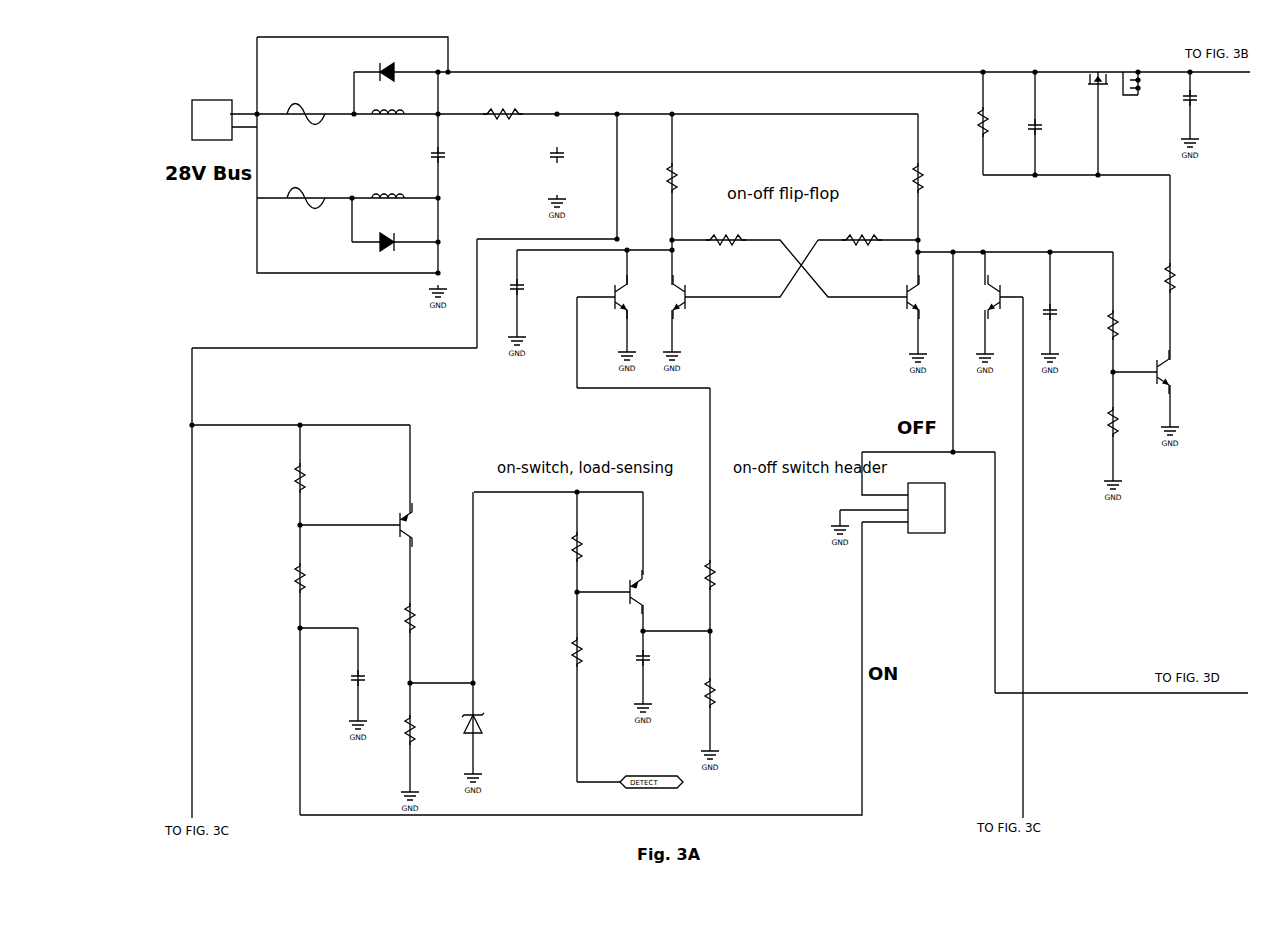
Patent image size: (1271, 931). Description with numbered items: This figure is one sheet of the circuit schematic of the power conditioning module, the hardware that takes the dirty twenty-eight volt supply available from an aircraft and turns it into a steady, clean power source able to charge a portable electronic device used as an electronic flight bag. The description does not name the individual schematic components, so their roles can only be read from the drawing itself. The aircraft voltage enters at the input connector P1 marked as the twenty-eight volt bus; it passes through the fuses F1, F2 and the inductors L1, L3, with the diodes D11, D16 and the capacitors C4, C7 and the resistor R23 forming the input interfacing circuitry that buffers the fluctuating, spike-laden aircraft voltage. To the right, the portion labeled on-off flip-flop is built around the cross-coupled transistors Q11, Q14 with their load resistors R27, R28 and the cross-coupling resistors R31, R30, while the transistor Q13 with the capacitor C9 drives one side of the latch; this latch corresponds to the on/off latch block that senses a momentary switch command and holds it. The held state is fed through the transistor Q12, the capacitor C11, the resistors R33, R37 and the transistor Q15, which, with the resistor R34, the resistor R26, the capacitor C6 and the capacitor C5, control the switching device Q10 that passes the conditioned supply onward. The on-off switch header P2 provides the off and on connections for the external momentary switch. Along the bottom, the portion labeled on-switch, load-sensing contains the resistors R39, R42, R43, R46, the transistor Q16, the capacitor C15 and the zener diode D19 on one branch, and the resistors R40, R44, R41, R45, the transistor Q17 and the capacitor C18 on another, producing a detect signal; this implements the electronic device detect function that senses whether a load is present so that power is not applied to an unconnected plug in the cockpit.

The 28V bus input connector P1 is at (211, 120).
The fuse F1 is at (295, 110).
The fuse F2 is at (295, 195).
The inductor L1 is at (388, 111).
The inductor L3 is at (388, 195).
The diode D11 is at (355, 63).
The diode D16 is at (355, 241).
The capacitor C4 is at (457, 164).
The capacitor C7 is at (576, 164).
The resistor R23 is at (501, 112).
The capacitor C9 is at (533, 291).
The resistor R27 is at (685, 178).
The resistor R28 is at (931, 178).
The resistor R31 is at (726, 242).
The resistor R30 is at (862, 242).
The transistor Q13 is at (634, 297).
The flip-flop transistor Q11 is at (692, 297).
The flip-flop transistor Q14 is at (925, 297).
The resistor R26 is at (997, 121).
The capacitor C6 is at (1051, 130).
The MOSFET switch Q10 is at (1121, 95).
The capacitor C5 is at (1208, 106).
The resistor R34 is at (1183, 278).
The transistor Q12 is at (1017, 295).
The capacitor C11 is at (1066, 316).
The resistor R33 is at (1126, 325).
The transistor Q15 is at (1177, 372).
The resistor R37 is at (1126, 422).
The on-off switch header P2 is at (925, 508).
The resistor R39 is at (313, 478).
The resistor R42 is at (313, 578).
The transistor Q16 is at (417, 525).
The resistor R43 is at (424, 618).
The capacitor C15 is at (374, 683).
The resistor R46 is at (423, 730).
The zener diode D19 is at (489, 726).
The resistor R40 is at (590, 547).
The resistor R44 is at (589, 652).
The load-sensing transistor Q17 is at (648, 592).
The capacitor C18 is at (659, 663).
The resistor R41 is at (723, 575).
The resistor R45 is at (723, 693).